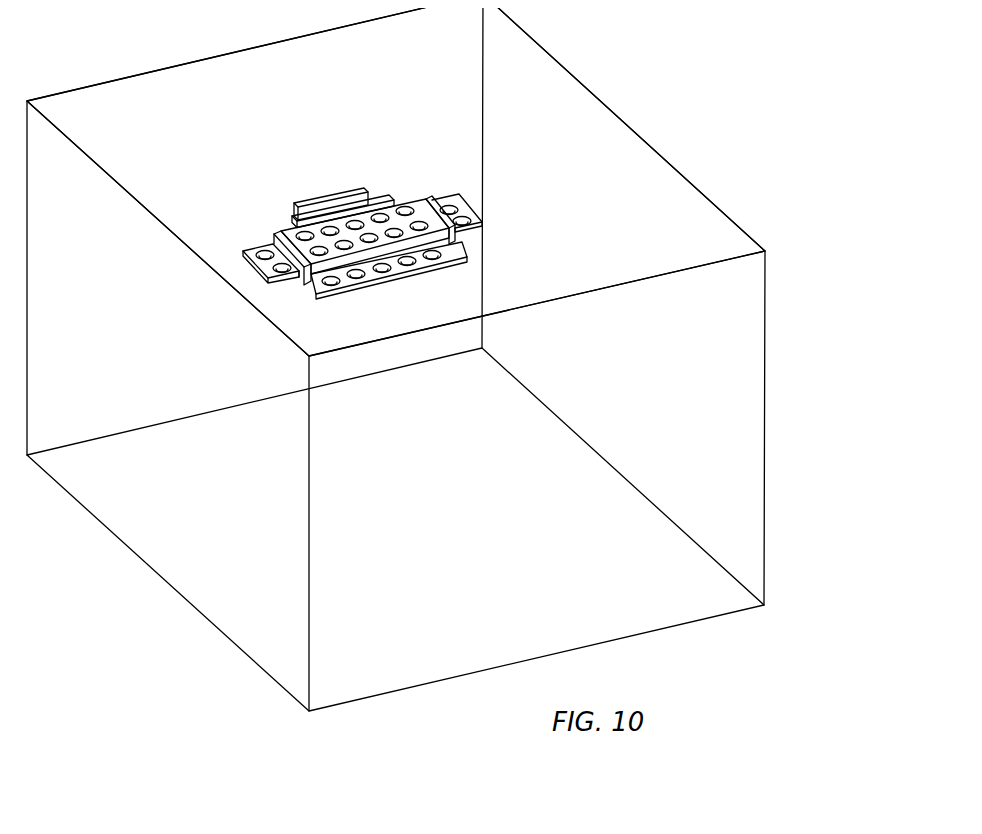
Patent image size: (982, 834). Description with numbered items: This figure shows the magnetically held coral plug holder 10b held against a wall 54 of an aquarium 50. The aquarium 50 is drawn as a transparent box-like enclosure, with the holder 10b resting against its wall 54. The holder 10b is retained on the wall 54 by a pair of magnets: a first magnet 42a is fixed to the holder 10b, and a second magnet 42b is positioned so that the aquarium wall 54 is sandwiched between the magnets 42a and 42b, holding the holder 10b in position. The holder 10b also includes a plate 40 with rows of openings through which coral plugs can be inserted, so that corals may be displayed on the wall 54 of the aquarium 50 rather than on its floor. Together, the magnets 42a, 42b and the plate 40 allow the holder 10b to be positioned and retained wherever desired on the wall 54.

The magnetically held holder 10b is at (362, 211).
The main plate 40 is at (392, 203).
The first magnet 42a is at (320, 194).
The second magnet 42b is at (338, 204).
The aquarium 50 is at (125, 61).
The wall 54 is at (238, 170).